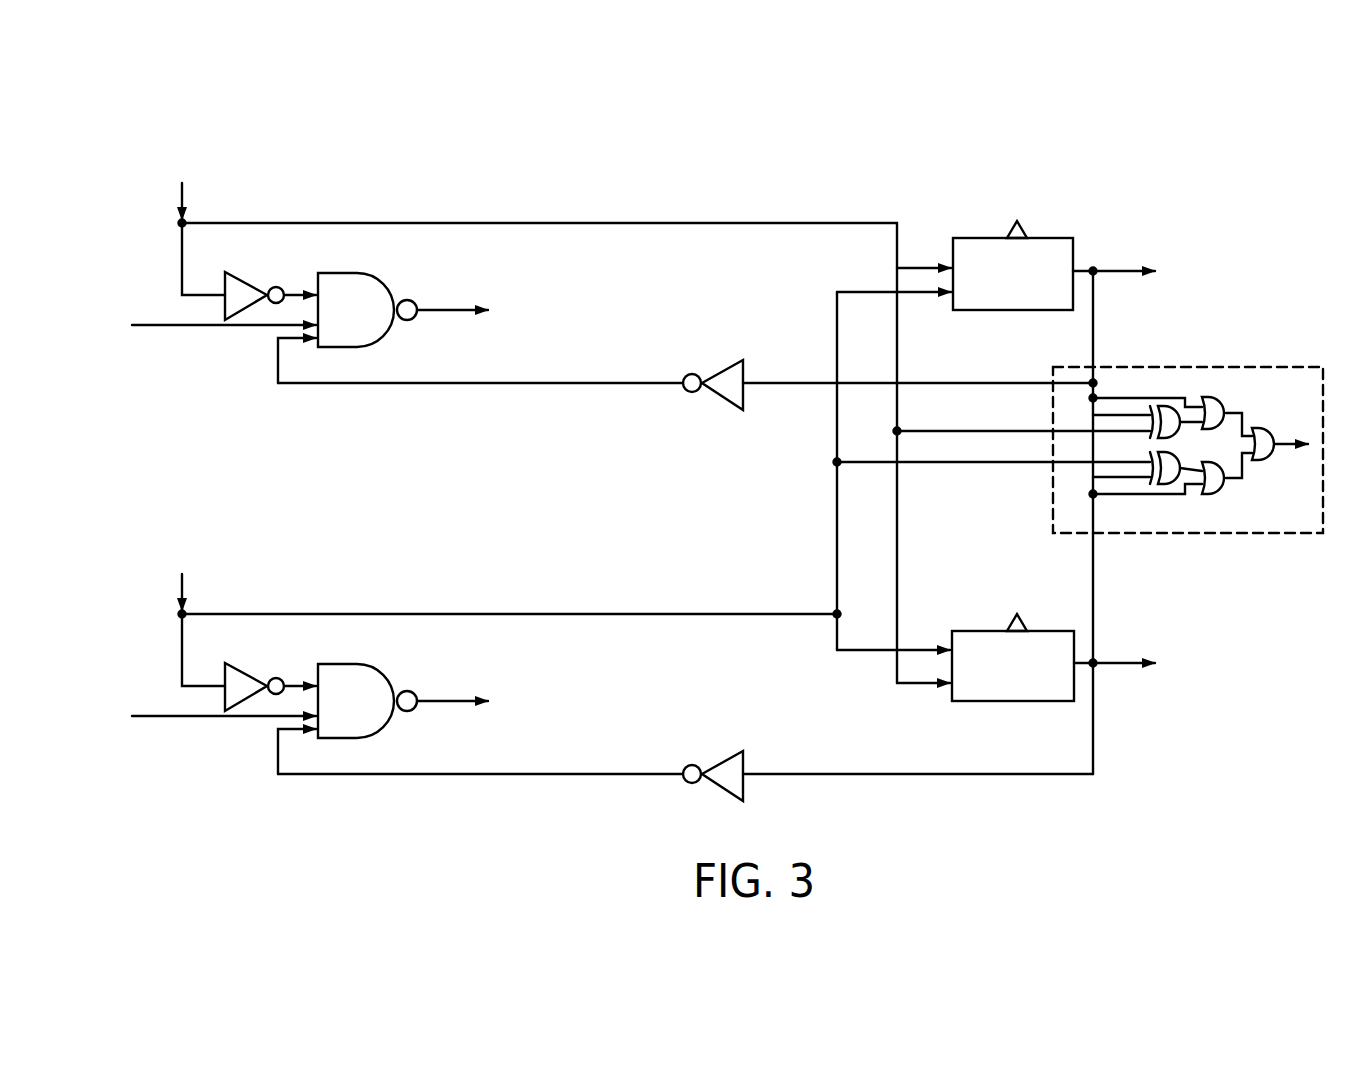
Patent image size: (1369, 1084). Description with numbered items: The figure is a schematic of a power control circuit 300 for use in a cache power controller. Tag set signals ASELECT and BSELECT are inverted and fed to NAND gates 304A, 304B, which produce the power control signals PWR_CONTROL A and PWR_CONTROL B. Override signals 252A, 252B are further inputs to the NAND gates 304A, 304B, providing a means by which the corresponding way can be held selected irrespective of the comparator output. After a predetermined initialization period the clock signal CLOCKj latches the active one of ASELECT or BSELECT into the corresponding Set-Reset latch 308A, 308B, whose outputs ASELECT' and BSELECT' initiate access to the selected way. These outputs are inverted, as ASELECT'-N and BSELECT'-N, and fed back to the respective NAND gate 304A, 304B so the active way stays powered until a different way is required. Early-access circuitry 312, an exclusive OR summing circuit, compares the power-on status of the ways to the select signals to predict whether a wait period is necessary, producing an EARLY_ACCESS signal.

The power control circuit 300 is at (933, 156).
The override signal 252A is at (206, 307).
The override signal 252B is at (206, 698).
The NAND gate 304A is at (383, 283).
The NAND gate 304B is at (383, 674).
The Set-Reset latch 308A is at (993, 310).
The Set-Reset latch 308B is at (1003, 701).
The early-access circuitry 312 is at (1189, 548).